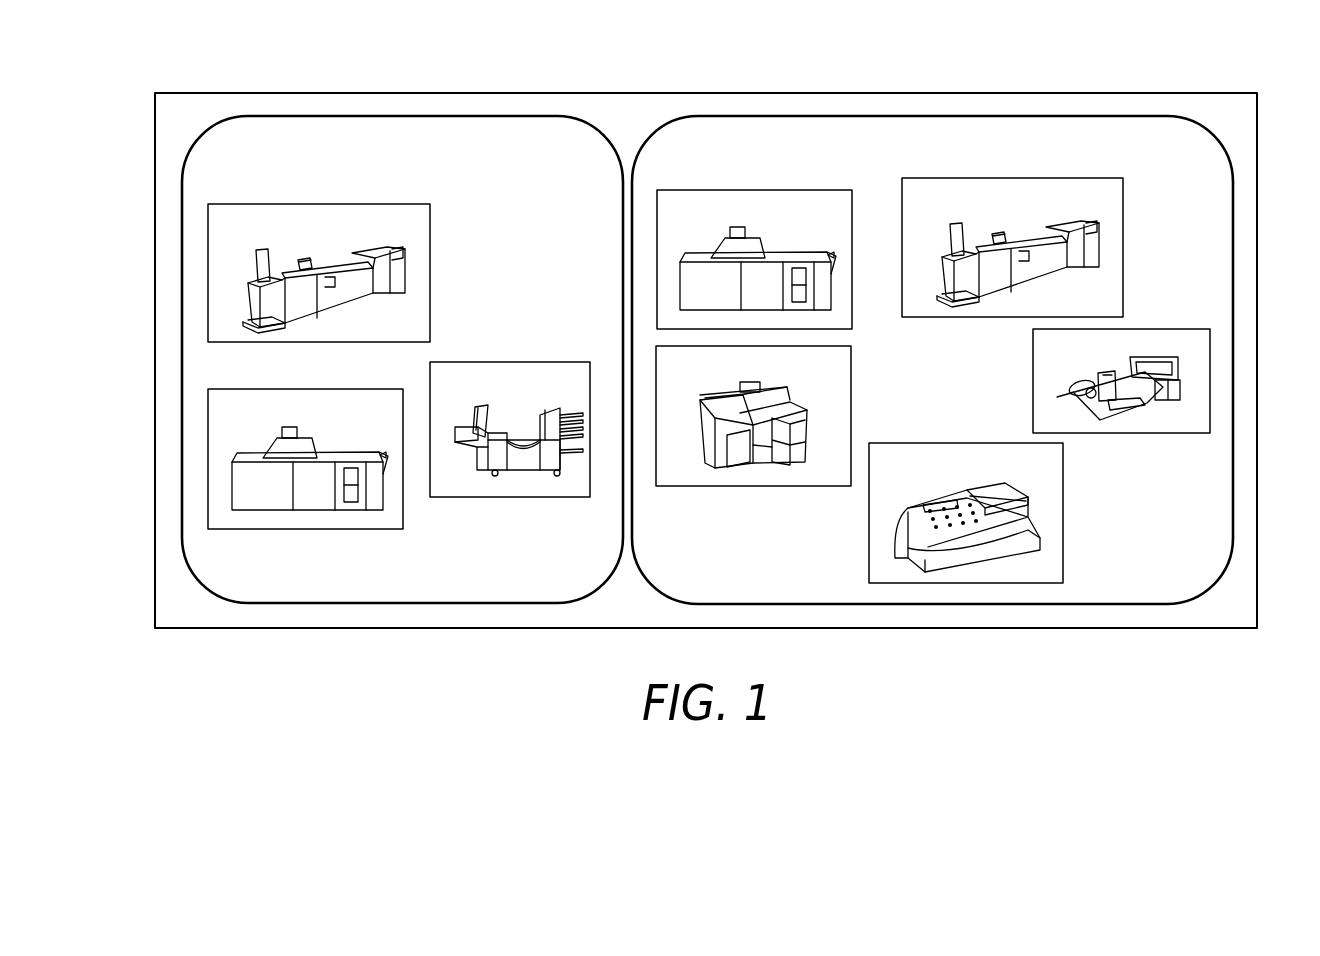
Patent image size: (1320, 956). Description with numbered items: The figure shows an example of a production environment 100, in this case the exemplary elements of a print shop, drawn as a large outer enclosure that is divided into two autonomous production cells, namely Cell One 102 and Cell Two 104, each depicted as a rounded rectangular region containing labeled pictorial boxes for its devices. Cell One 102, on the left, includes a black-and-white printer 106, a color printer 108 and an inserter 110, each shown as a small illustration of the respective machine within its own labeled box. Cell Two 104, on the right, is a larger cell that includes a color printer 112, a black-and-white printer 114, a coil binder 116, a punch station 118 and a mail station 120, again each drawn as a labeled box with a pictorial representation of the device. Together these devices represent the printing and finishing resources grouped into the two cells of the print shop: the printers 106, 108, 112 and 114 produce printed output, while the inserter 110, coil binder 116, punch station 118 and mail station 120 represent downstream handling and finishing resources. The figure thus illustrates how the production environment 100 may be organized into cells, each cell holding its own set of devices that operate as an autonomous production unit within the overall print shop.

The production environment 100 is at (553, 64).
The cell one 102 is at (403, 116).
The cell two 104 is at (933, 116).
The black-and-white printer 106 is at (208, 273).
The color printer 108 is at (307, 529).
The inserter 110 is at (507, 497).
The color printer 112 is at (742, 190).
The black-and-white printer 114 is at (1044, 178).
The coil binder 116 is at (753, 486).
The punch station 118 is at (1210, 383).
The mail station 120 is at (965, 583).